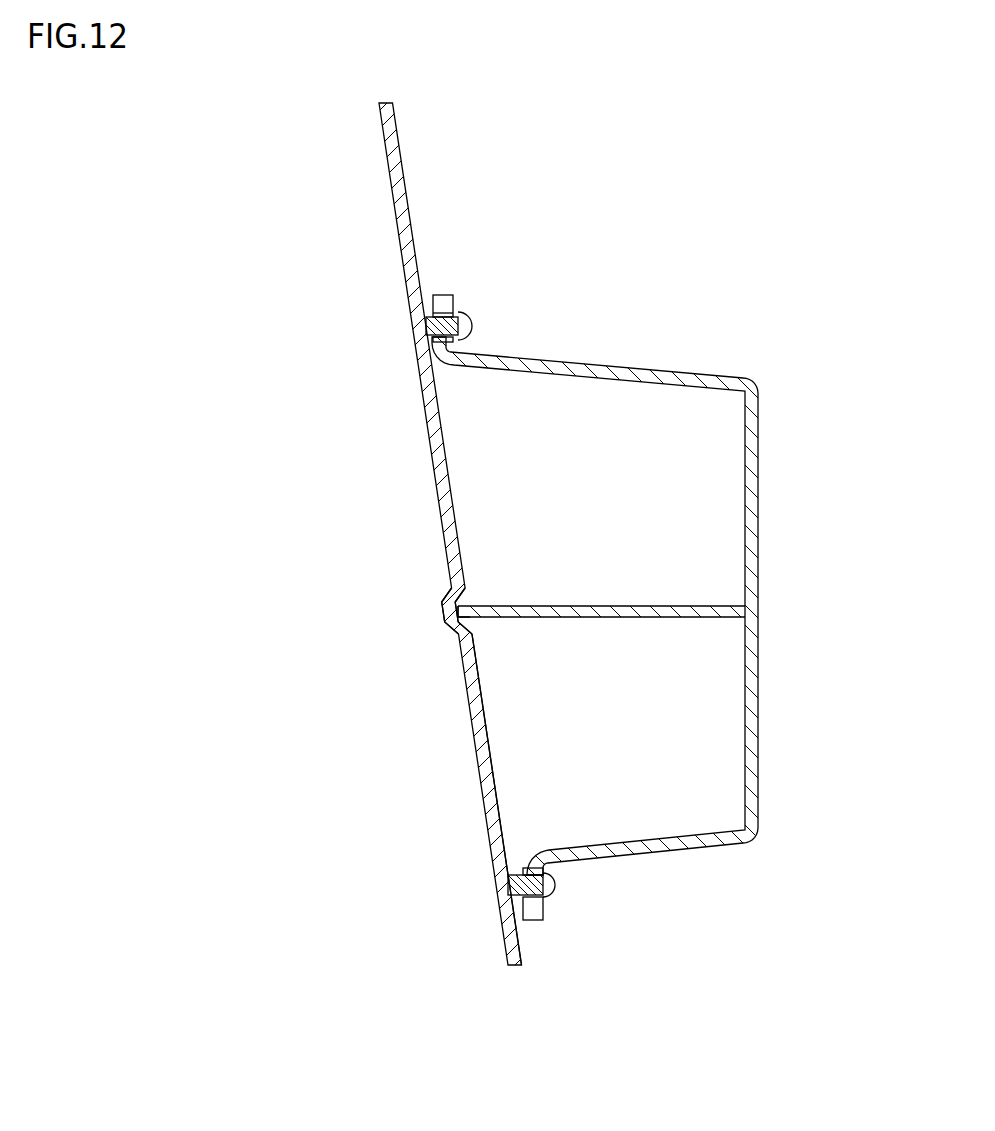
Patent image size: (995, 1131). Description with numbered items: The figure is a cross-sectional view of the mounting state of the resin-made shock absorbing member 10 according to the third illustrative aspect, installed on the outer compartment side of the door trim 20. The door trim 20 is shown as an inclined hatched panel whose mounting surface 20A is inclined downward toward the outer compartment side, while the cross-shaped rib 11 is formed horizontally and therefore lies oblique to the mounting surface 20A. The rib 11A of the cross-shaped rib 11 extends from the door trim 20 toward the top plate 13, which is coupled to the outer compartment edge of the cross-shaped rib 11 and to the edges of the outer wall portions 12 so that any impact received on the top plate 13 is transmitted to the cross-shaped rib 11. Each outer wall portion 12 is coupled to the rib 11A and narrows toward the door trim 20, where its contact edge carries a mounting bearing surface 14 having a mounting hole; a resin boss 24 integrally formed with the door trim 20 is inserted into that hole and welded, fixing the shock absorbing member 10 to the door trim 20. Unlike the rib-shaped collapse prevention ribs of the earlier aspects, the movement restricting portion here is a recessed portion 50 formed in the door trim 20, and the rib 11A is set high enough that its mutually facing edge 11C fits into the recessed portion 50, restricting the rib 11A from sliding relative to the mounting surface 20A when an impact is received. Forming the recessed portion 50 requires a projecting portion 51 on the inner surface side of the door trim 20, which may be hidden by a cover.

The resin-made shock absorbing member 10 is at (757, 353).
The cross-shaped rib 11 is at (710, 619).
The rib 11A is at (623, 605).
The mutually facing edge 11C is at (449, 616).
The outer wall portion 12 is at (605, 371).
The top plate 13 is at (752, 472).
The mounting bearing surface 14 is at (446, 294).
The door trim 20 is at (400, 131).
The mounting surface 20A is at (485, 712).
The resin boss 24 is at (458, 323).
The recessed portion 50 is at (466, 600).
The projecting portion 51 is at (443, 607).